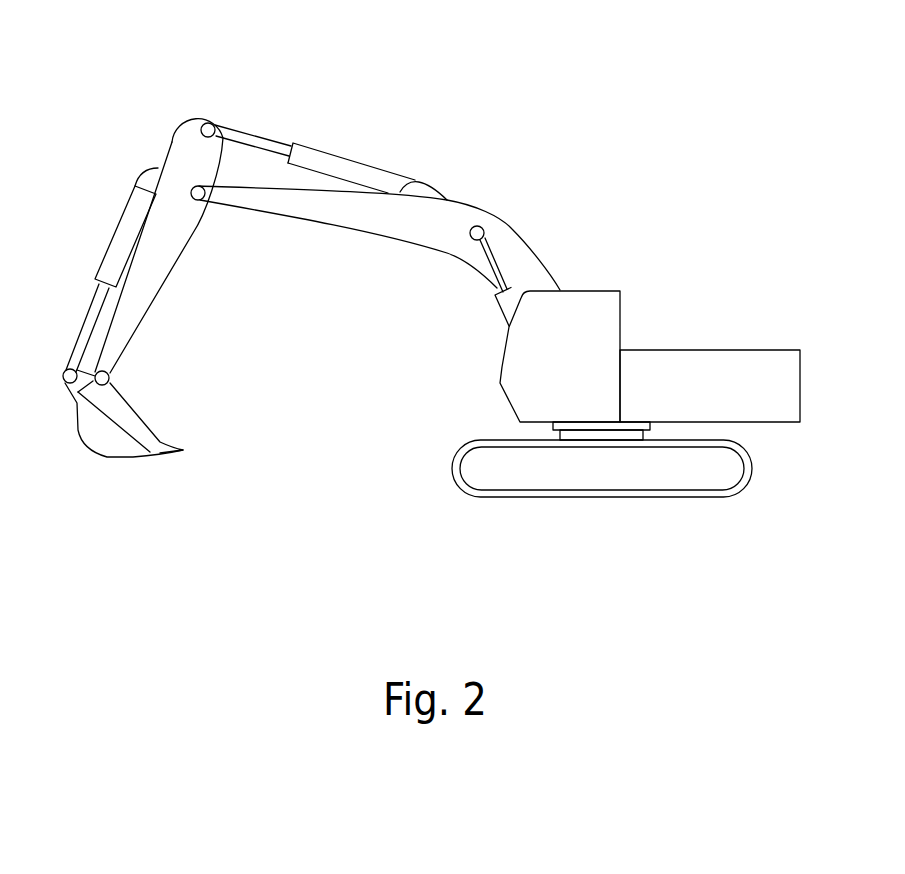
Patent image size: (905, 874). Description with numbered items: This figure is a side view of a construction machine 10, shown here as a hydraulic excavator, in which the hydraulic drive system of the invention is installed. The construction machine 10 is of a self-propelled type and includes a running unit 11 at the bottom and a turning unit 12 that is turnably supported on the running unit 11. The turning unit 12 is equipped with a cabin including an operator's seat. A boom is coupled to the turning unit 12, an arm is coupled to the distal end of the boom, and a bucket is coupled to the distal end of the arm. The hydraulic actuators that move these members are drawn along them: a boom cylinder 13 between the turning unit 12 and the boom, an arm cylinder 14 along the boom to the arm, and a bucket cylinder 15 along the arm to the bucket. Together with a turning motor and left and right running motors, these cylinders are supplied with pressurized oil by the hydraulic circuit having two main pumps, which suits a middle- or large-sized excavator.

The construction machine 10 is at (600, 148).
The running unit 11 is at (587, 477).
The turning unit 12 is at (713, 360).
The boom cylinder 13 is at (500, 307).
The arm cylinder 14 is at (333, 167).
The bucket cylinder 15 is at (125, 238).